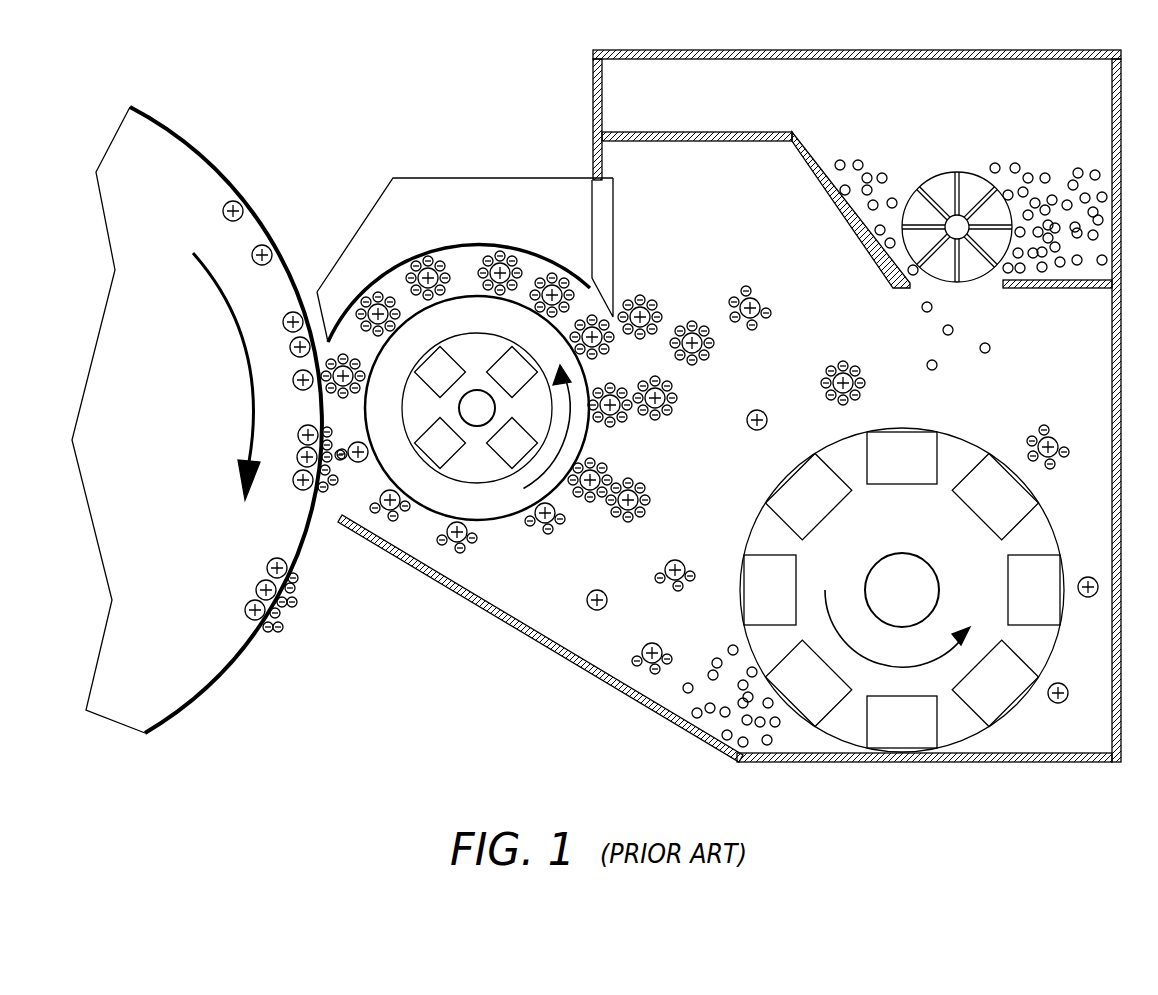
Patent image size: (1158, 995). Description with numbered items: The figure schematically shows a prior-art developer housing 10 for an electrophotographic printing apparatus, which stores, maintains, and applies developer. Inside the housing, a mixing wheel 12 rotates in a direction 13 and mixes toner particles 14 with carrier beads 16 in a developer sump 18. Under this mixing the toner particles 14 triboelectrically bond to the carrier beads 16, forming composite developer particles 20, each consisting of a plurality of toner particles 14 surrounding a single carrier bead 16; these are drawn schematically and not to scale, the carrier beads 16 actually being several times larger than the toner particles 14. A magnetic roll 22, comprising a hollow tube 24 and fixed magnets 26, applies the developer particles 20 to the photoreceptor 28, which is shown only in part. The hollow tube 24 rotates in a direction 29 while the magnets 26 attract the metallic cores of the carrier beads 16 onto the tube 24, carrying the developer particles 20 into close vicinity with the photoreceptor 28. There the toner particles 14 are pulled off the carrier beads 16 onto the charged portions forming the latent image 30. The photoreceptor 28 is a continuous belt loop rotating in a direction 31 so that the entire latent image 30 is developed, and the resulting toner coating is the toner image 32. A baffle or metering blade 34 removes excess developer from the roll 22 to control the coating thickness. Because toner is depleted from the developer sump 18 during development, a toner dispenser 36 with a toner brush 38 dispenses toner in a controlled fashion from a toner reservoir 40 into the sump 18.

The developer housing 10 is at (436, 106).
The mixing wheel 12 is at (917, 537).
The direction 13 is at (844, 607).
The toner particles 14 is at (688, 690).
The carrier beads 16 is at (597, 610).
The developer sump 18 is at (729, 487).
The composite developer particles 20 is at (680, 328).
The magnetic roll 22 is at (503, 556).
The hollow tube 24 is at (502, 505).
The fixed magnets 26 is at (435, 447).
The photoreceptor 28 is at (152, 429).
The direction 29 is at (587, 447).
The latent image 30 is at (262, 583).
The direction 31 is at (214, 291).
The toner image 32 is at (277, 630).
The metering blade 34 is at (613, 242).
The toner dispenser 36 is at (984, 43).
The toner brush 38 is at (937, 173).
The toner reservoir 40 is at (872, 117).